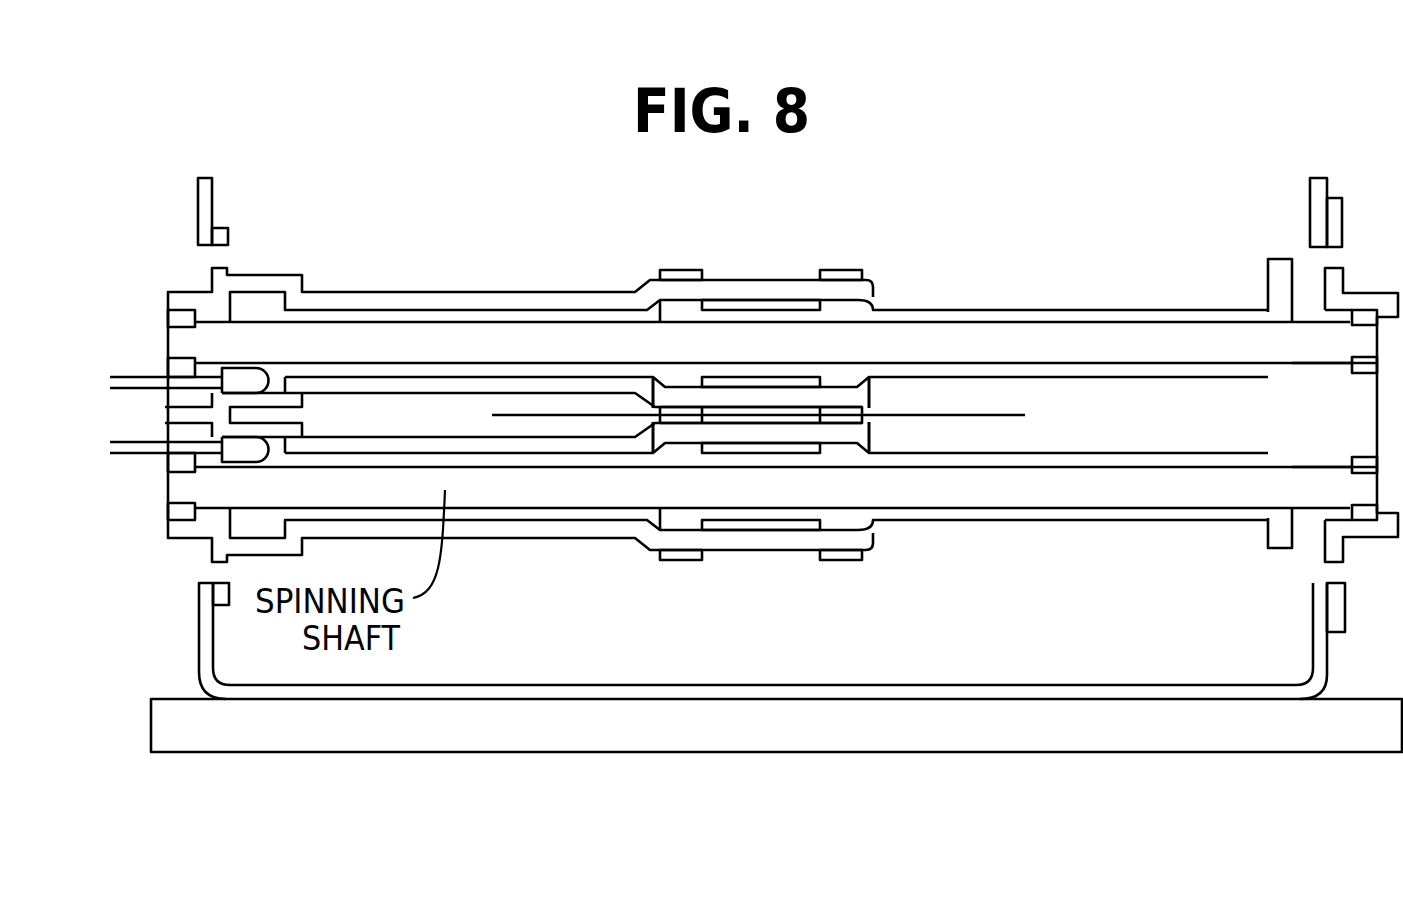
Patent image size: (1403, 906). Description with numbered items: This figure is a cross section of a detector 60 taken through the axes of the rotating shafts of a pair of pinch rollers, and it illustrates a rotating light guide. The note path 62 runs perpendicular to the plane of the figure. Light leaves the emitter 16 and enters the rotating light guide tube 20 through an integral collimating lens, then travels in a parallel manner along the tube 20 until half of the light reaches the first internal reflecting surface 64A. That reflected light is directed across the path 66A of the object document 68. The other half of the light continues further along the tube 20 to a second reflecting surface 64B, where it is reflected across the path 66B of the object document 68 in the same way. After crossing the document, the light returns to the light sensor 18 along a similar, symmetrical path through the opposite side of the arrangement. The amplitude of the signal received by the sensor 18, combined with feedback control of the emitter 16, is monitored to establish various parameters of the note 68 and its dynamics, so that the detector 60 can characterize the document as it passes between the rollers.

The emitter 16 is at (243, 448).
The light sensor 18 is at (243, 377).
The rotating light guide tube 20 is at (323, 445).
The detector 60 is at (1087, 108).
The note path 62 is at (460, 413).
The first internal reflecting surface 64A is at (663, 440).
The second reflecting surface 64B is at (873, 437).
The path of the object document 66A is at (652, 405).
The path of the object document 66B is at (873, 395).
The object document 68 is at (966, 420).